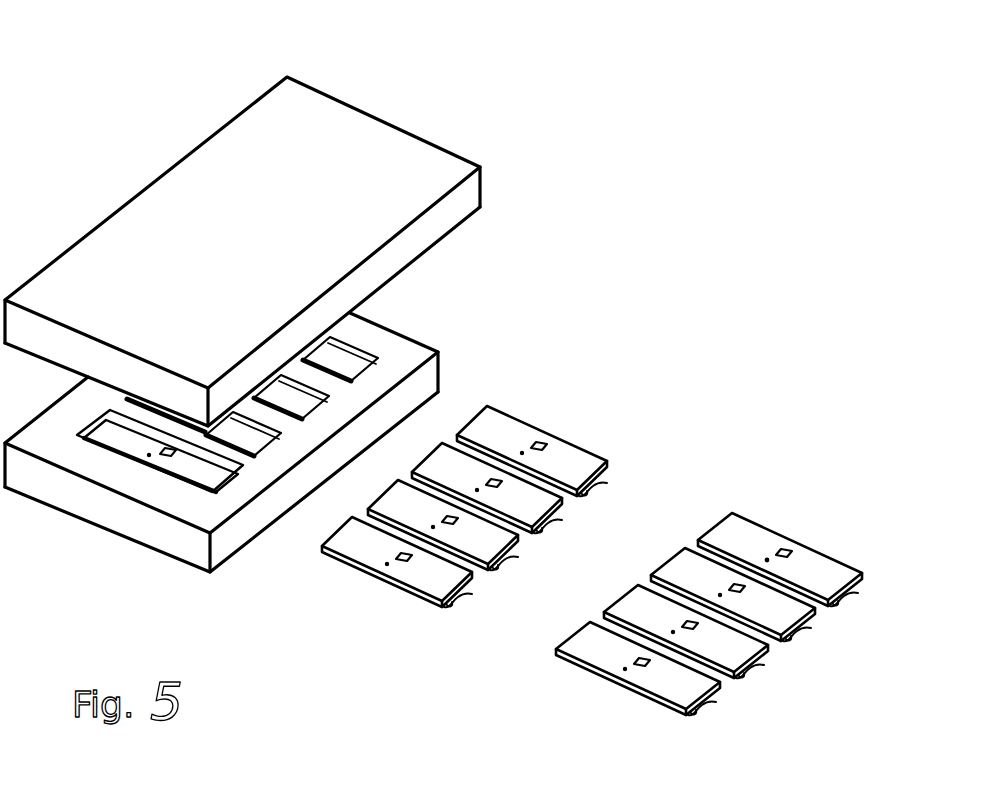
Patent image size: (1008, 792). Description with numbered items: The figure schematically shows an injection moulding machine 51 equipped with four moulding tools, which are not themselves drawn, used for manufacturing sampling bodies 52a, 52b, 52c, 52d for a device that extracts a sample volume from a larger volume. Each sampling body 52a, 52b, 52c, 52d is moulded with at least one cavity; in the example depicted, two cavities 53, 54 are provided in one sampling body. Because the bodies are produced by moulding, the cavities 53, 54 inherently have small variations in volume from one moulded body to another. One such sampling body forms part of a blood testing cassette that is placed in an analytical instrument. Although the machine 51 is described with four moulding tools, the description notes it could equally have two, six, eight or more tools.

The injection moulding machine 51 is at (322, 142).
The sampling body 52a is at (605, 470).
The sampling body 52b is at (568, 508).
The sampling body 52c is at (523, 547).
The sampling body 52d is at (477, 582).
The cavity 53 is at (767, 557).
The cavity 54 is at (800, 552).